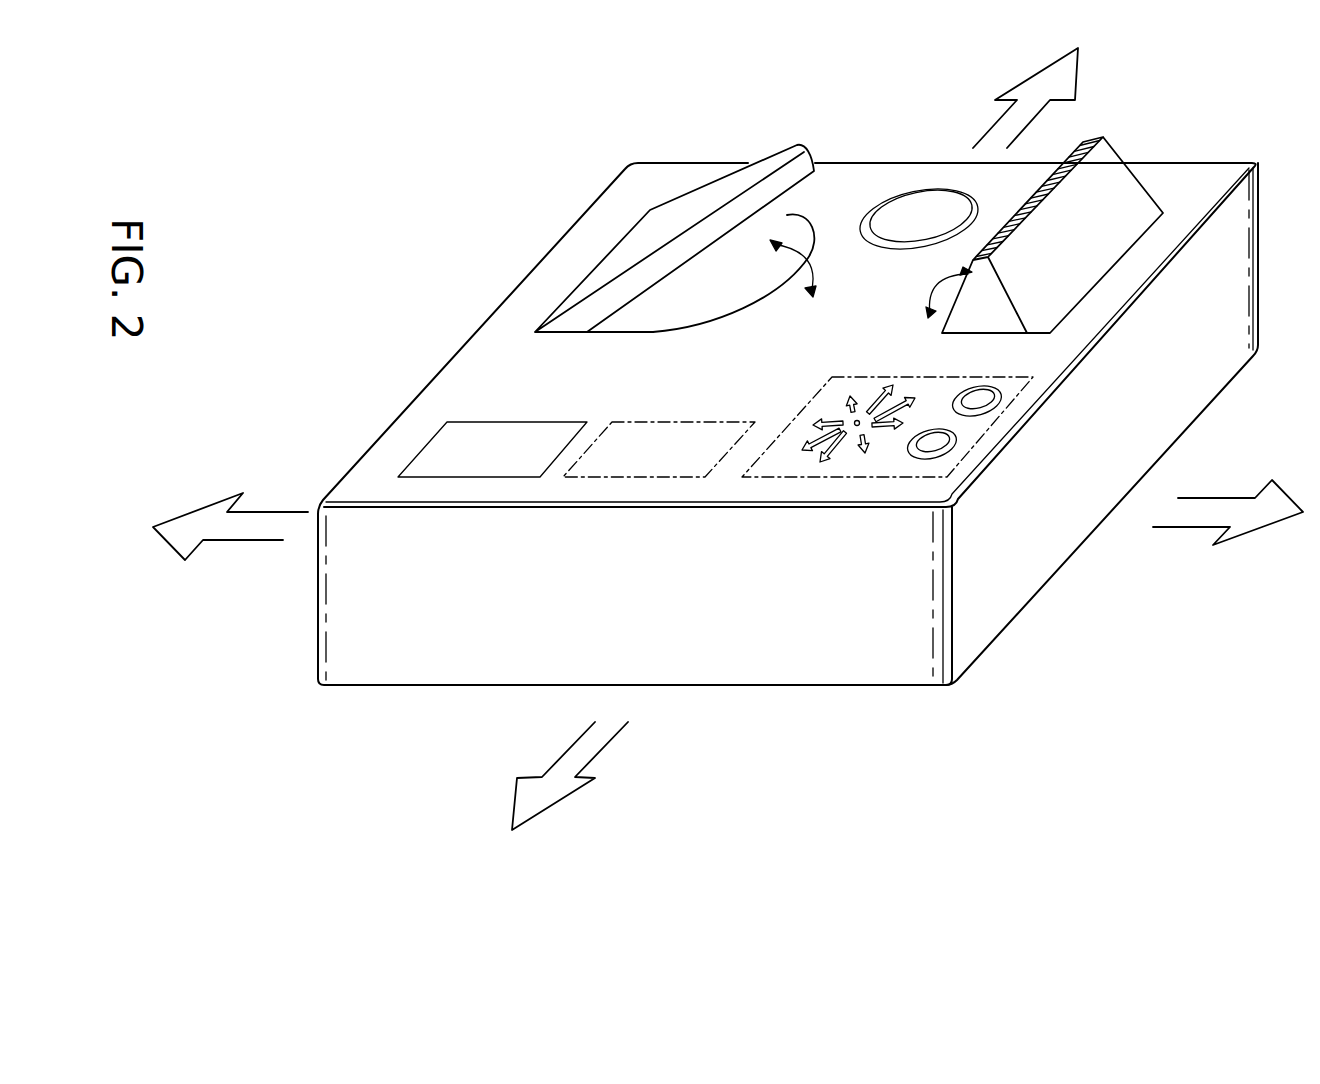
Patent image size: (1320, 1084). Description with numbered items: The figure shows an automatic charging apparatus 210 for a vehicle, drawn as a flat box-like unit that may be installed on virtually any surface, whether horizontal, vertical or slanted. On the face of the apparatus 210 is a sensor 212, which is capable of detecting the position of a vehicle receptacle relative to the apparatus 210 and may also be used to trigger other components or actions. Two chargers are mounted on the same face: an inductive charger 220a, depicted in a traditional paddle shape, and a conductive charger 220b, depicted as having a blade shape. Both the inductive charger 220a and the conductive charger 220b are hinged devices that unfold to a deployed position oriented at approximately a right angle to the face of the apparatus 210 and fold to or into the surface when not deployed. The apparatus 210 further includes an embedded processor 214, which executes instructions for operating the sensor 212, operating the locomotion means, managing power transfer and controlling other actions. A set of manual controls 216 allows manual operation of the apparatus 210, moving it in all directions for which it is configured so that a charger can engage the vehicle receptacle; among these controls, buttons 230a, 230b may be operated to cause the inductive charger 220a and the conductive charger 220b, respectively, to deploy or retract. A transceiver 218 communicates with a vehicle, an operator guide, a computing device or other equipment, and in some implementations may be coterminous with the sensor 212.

The automatic charging apparatus 210 is at (440, 165).
The sensor 212 is at (943, 230).
The embedded processor 214 is at (515, 463).
The manual controls 216 is at (840, 415).
The transceiver 218 is at (682, 463).
The inductive charger 220a is at (777, 165).
The conductive charger 220b is at (1127, 190).
The button 230a is at (999, 401).
The button 230b is at (955, 441).